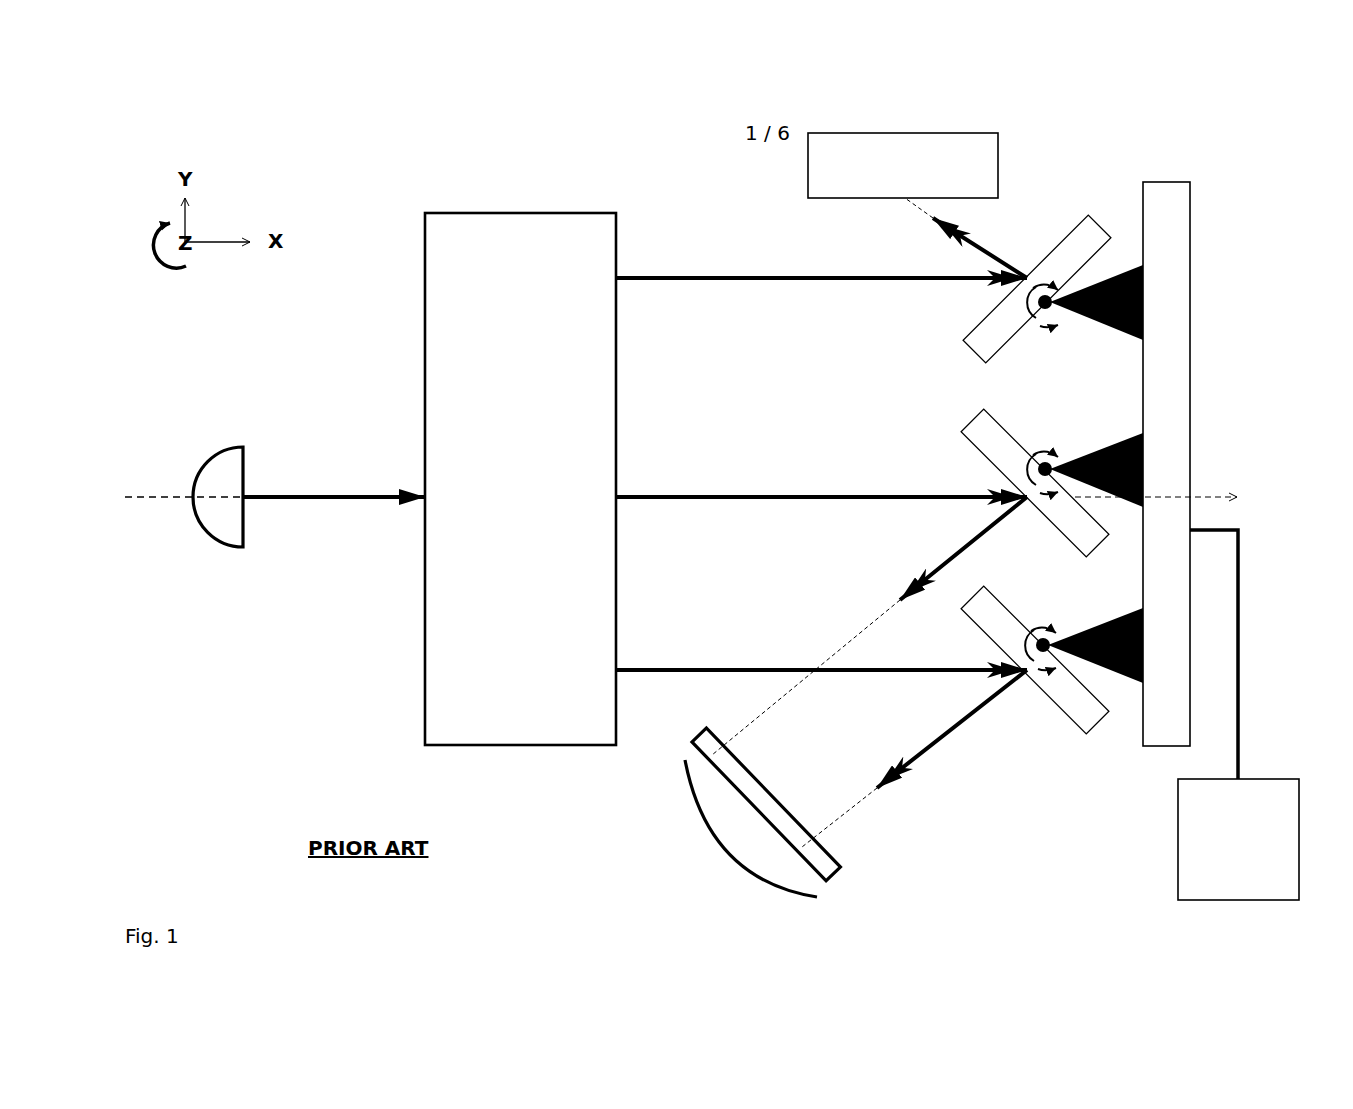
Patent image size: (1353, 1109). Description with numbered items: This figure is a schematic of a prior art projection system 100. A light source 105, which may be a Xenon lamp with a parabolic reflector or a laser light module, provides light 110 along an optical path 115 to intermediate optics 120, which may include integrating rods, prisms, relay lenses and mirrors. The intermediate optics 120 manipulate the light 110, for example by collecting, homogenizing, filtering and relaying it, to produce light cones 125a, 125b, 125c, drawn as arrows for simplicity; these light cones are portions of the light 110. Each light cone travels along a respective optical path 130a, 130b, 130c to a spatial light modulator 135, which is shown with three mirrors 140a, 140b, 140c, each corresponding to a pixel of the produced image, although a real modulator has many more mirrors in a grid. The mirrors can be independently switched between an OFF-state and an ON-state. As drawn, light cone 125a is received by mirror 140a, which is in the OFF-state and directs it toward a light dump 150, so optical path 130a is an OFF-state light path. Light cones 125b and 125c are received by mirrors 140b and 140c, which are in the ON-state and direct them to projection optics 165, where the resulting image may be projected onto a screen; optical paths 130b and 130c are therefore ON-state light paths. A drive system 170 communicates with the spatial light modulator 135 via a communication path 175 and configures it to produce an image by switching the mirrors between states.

The projection system 100 is at (372, 185).
The light source 105 is at (215, 545).
The light 110 is at (290, 512).
The optical path 115 is at (143, 487).
The intermediate optics 120 is at (520, 479).
The light cone 125a is at (665, 278).
The light cone 125b is at (658, 497).
The light cone 125c is at (662, 670).
The optical path 130a is at (927, 215).
The optical path 130b is at (788, 695).
The optical path 130c is at (870, 795).
The spatial light modulator 135 is at (1156, 464).
The mirror 140a is at (1048, 253).
The mirror 140b is at (990, 410).
The mirror 140c is at (985, 588).
The light dump 150 is at (903, 165).
The projection optics 165 is at (715, 845).
The drive system 170 is at (1238, 839).
The communication path 175 is at (1240, 555).